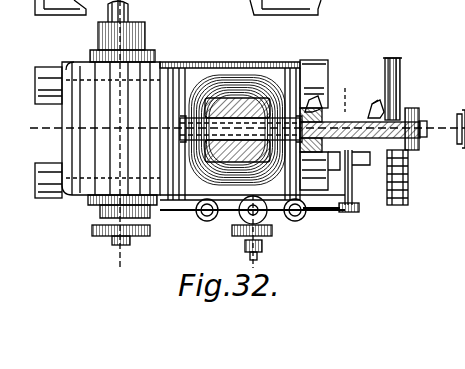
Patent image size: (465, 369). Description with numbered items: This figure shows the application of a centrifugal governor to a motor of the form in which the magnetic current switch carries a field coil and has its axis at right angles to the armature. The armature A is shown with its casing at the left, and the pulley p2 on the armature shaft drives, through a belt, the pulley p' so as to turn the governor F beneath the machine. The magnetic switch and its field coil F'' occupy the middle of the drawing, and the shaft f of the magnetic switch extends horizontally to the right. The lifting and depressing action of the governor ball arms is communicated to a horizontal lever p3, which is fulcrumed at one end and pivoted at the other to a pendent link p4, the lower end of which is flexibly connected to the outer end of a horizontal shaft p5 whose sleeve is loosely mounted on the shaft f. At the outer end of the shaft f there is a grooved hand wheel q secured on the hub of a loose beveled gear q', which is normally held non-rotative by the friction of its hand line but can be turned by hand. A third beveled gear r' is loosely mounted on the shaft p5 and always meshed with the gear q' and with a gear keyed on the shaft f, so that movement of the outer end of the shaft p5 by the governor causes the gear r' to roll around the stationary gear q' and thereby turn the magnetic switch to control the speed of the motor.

The armature A is at (97, 140).
The governor F is at (252, 220).
The field magnet frame F'' is at (252, 131).
The shaft of the magnetic switch f is at (300, 129).
The pulley p' is at (261, 231).
The pulley p2 is at (95, 236).
The horizontal lever p3 is at (322, 212).
The pendent link p4 is at (350, 214).
The horizontal shaft p5 is at (356, 208).
The third beveled gear r' is at (338, 125).
The grooved hand wheel q is at (401, 89).
The loose beveled gear q' is at (372, 98).